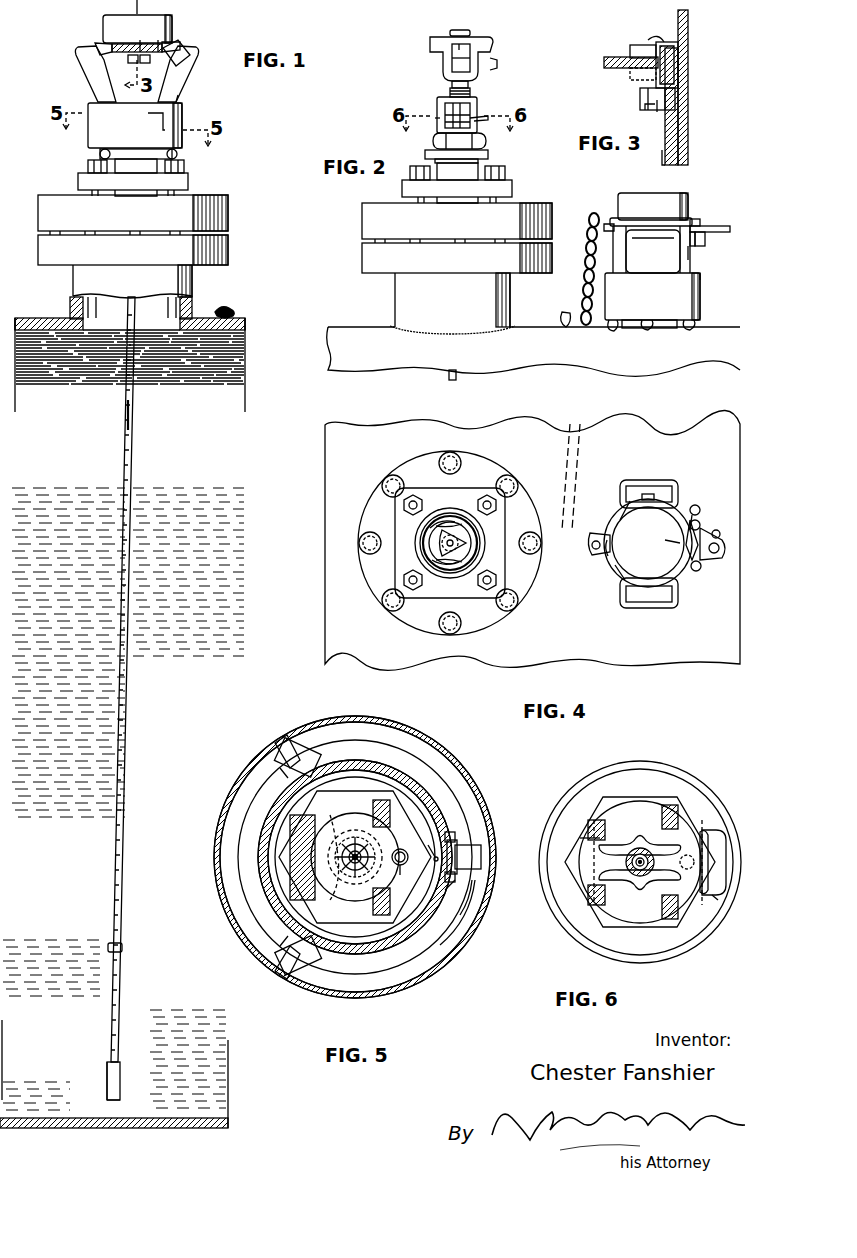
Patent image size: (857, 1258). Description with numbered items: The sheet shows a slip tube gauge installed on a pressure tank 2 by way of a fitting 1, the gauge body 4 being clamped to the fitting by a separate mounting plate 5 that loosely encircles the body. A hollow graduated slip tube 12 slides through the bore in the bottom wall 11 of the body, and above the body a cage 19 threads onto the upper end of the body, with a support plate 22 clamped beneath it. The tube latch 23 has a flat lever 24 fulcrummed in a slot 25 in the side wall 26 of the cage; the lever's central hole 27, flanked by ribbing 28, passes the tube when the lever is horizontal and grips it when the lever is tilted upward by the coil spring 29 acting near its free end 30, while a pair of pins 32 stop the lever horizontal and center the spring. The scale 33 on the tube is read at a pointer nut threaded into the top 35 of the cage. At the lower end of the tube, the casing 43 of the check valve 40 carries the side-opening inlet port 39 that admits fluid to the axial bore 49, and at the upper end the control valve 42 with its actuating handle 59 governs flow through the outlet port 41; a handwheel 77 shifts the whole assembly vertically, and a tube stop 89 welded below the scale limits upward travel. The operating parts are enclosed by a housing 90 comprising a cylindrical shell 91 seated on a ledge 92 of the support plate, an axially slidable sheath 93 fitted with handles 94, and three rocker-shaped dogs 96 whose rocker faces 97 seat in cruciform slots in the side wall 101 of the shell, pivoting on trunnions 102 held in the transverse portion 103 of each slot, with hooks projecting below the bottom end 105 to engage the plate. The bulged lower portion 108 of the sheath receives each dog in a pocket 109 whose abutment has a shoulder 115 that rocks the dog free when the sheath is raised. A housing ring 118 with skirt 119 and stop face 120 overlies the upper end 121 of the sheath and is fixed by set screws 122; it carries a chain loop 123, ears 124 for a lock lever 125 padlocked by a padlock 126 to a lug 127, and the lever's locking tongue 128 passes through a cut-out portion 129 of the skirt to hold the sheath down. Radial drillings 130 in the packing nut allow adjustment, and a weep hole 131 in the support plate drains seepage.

In FIG. 1, the fitting 1 is at (228, 200).
In FIG. 2, the fitting 1 is at (552, 203).
In FIG. 4, the fitting 1 is at (508, 490).
In FIG. 1, the pressure tank 2 is at (247, 320).
In FIG. 2, the pressure tank 2 is at (360, 326).
In FIG. 4, the pressure tank 2 is at (532, 540).
In FIG. 1, the body 4 is at (136, 166).
In FIG. 2, the body 4 is at (457, 172).
In FIG. 1, the mounting plate 5 is at (189, 183).
In FIG. 2, the mounting plate 5 is at (513, 185).
In FIG. 4, the mounting plate 5 is at (506, 512).
In FIG. 5, the bottom wall 11 is at (350, 832).
In FIG. 1, the slip tube 12 is at (133, 437).
In FIG. 2, the slip tube 12 is at (469, 88).
In FIG. 4, the slip tube 12 is at (601, 551).
In FIG. 5, the slip tube 12 is at (368, 850).
In FIG. 6, the slip tube 12 is at (649, 862).
In FIG. 2, the cage 19 is at (427, 101).
In FIG. 5, the cage 19 is at (302, 814).
In FIG. 6, the cage 19 is at (581, 828).
In FIG. 2, the support plate 22 is at (489, 152).
In FIG. 4, the support plate 22 is at (480, 558).
In FIG. 6, the support plate 22 is at (612, 765).
In FIG. 2, the tube latch 23 is at (485, 115).
In FIG. 6, the tube latch 23 is at (708, 822).
In FIG. 6, the lever 24 is at (714, 862).
In FIG. 6, the slot 25 is at (580, 838).
In FIG. 5, the side wall 26 is at (302, 885).
In FIG. 6, the side wall 26 is at (590, 896).
In FIG. 6, the hole 27 is at (626, 862).
In FIG. 6, the ribbing 28 is at (645, 840).
In FIG. 5, the coil spring 29 is at (403, 848).
In FIG. 6, the coil spring 29 is at (689, 854).
In FIG. 6, the free end 30 is at (712, 897).
In FIG. 5, the pins 32 is at (404, 877).
In FIG. 1, the scale 33 is at (124, 414).
In FIG. 2, the top 35 is at (445, 92).
In FIG. 1, the inlet port 39 is at (121, 1097).
In FIG. 1, the check valve 40 is at (100, 1082).
In FIG. 2, the outlet port 41 is at (486, 66).
In FIG. 4, the outlet port 41 is at (474, 530).
In FIG. 2, the control valve 42 is at (441, 60).
In FIG. 1, the casing 43 is at (121, 1075).
In FIG. 5, the axial bore 49 is at (364, 864).
In FIG. 6, the axial bore 49 is at (647, 875).
In FIG. 2, the actuating handle 59 is at (464, 30).
In FIG. 4, the actuating handle 59 is at (454, 524).
In FIG. 2, the handwheel 77 is at (489, 38).
In FIG. 4, the handwheel 77 is at (420, 544).
In FIG. 1, the tube stop 89 is at (123, 948).
In FIG. 1, the housing 90 is at (179, 26).
In FIG. 2, the housing 90 is at (697, 197).
In FIG. 4, the housing 90 is at (648, 543).
In FIG. 5, the housing 90 is at (446, 734).
In FIG. 5, the shell 91 is at (424, 778).
In FIG. 2, the ledge 92 is at (433, 150).
In FIG. 4, the ledge 92 is at (436, 513).
In FIG. 6, the ledge 92 is at (672, 770).
In FIG. 1, the sheath 93 is at (181, 98).
In FIG. 2, the sheath 93 is at (701, 278).
In FIG. 4, the sheath 93 is at (630, 492).
In FIG. 5, the sheath 93 is at (470, 770).
In FIG. 1, the handles 94 is at (76, 52).
In FIG. 2, the handles 94 is at (662, 218).
In FIG. 4, the handles 94 is at (668, 482).
In FIG. 1, the dogs 96 is at (108, 149).
In FIG. 2, the dogs 96 is at (612, 331).
In FIG. 4, the dogs 96 is at (649, 494).
In FIG. 5, the dogs 96 is at (290, 745).
In FIG. 5, the rocker face 97 is at (312, 752).
In FIG. 5, the side wall 101 is at (342, 762).
In FIG. 5, the trunnions 102 is at (282, 770).
In FIG. 5, the transverse portion 103 is at (458, 882).
In FIG. 2, the bottom end 105 is at (637, 330).
In FIG. 1, the lower portion 108 is at (183, 108).
In FIG. 2, the lower portion 108 is at (701, 296).
In FIG. 5, the lower portion 108 is at (466, 918).
In FIG. 5, the pocket 109 is at (455, 945).
In FIG. 5, the shoulder 115 is at (430, 960).
In FIG. 1, the housing ring 118 is at (181, 43).
In FIG. 2, the housing ring 118 is at (630, 218).
In FIG. 3, the housing ring 118 is at (668, 42).
In FIG. 4, the housing ring 118 is at (642, 602).
In FIG. 2, the skirt 119 is at (640, 243).
In FIG. 3, the skirt 119 is at (641, 98).
In FIG. 3, the stop face 120 is at (689, 70).
In FIG. 3, the upper end 121 is at (688, 120).
In FIG. 4, the set screws 122 is at (647, 540).
In FIG. 2, the loop 123 is at (600, 218).
In FIG. 4, the loop 123 is at (590, 555).
In FIG. 1, the ears 124 is at (100, 43).
In FIG. 2, the ears 124 is at (702, 221).
In FIG. 3, the ears 124 is at (632, 47).
In FIG. 4, the ears 124 is at (697, 571).
In FIG. 1, the lock lever 125 is at (122, 44).
In FIG. 2, the lock lever 125 is at (731, 228).
In FIG. 3, the lock lever 125 is at (604, 62).
In FIG. 4, the lock lever 125 is at (714, 560).
In FIG. 1, the padlock 126 is at (184, 65).
In FIG. 2, the padlock 126 is at (696, 248).
In FIG. 4, the padlock 126 is at (697, 507).
In FIG. 1, the lug 127 is at (155, 40).
In FIG. 4, the lug 127 is at (688, 530).
In FIG. 1, the locking tongue 128 is at (130, 62).
In FIG. 3, the locking tongue 128 is at (646, 107).
In FIG. 4, the locking tongue 128 is at (700, 520).
In FIG. 1, the cut-out portion 129 is at (146, 62).
In FIG. 3, the cut-out portion 129 is at (658, 110).
In FIG. 5, the radial drillings 130 is at (332, 898).
In FIG. 5, the weep hole 131 is at (435, 843).